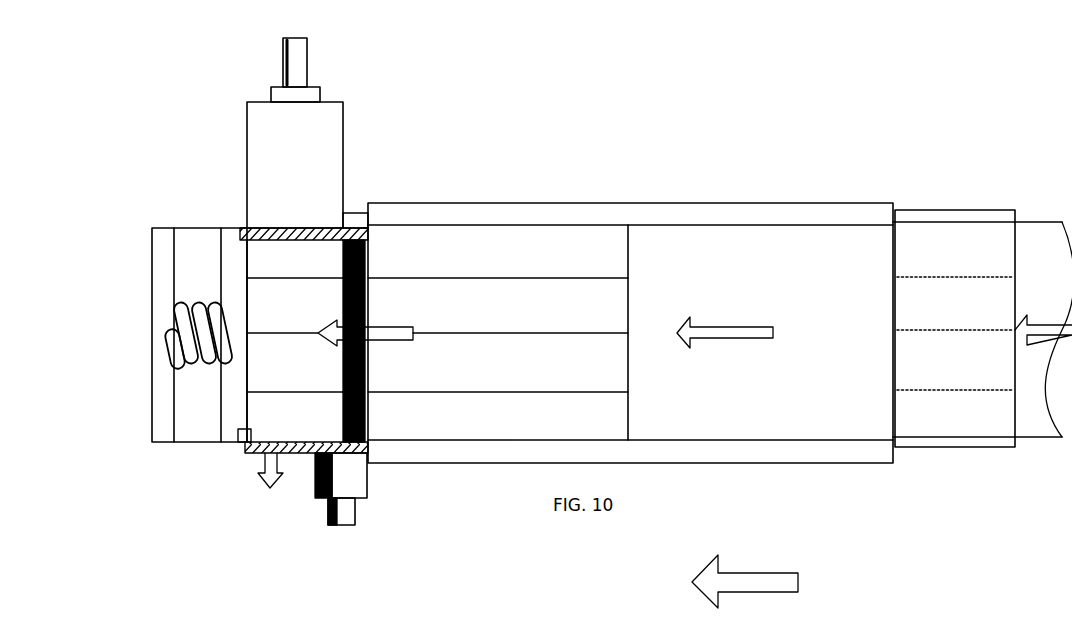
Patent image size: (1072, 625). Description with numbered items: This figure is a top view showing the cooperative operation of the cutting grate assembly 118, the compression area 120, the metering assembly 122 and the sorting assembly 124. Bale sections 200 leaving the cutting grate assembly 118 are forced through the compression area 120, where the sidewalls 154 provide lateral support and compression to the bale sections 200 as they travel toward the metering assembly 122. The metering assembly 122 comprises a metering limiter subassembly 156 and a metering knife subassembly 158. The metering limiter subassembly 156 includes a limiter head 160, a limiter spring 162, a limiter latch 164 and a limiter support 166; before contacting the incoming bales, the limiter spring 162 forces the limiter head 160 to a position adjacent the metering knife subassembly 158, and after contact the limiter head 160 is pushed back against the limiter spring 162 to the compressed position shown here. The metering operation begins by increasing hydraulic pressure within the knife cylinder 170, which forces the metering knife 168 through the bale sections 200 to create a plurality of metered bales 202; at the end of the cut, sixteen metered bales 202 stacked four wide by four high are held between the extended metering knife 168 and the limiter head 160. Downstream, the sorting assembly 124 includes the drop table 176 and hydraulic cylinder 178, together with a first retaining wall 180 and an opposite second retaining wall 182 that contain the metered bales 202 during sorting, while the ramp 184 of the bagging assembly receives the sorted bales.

The cutting grate assembly 118 is at (934, 463).
The compression area 120 is at (783, 298).
The metering assembly 122 is at (262, 500).
The sorting assembly 124 is at (270, 133).
The sidewalls 154 is at (655, 207).
The metering limiter subassembly 156 is at (116, 397).
The metering knife subassembly 158 is at (430, 471).
The limiter head 160 is at (230, 262).
The limiter spring 162 is at (216, 305).
The limiter latch 164 is at (243, 233).
The limiter support 166 is at (160, 378).
The metering knife 168 is at (365, 418).
The knife cylinder 170 is at (352, 475).
The drop table 176 is at (322, 192).
The hydraulic cylinder 178 is at (285, 52).
The first retaining wall 180 is at (308, 444).
The second retaining wall 182 is at (363, 229).
The ramp 184 is at (602, 624).
The bale sections 200 is at (528, 328).
The metered bales 202 is at (325, 384).